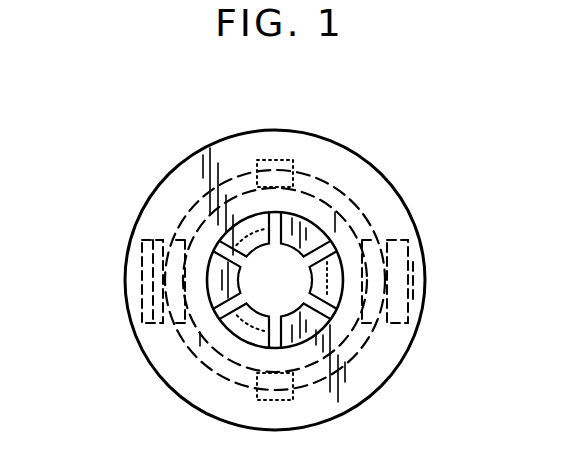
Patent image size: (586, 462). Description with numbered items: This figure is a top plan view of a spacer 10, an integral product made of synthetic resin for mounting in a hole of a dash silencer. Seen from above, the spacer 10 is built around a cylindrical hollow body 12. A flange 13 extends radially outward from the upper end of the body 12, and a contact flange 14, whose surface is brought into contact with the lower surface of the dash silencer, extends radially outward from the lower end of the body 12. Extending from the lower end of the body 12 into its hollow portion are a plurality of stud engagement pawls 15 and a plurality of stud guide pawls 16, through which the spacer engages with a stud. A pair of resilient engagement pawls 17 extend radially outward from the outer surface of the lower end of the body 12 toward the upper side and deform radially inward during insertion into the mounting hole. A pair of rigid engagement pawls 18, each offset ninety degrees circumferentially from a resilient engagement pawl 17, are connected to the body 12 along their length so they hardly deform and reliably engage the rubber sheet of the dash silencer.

The spacer 10 is at (345, 135).
The cylindrical hollow body 12 is at (224, 352).
The flange 13 is at (368, 197).
The contact flange 14 is at (352, 360).
The stud engagement pawls 15 is at (318, 279).
The stud guide pawls 16 is at (228, 268).
The resilient engagement pawls 17 is at (425, 262).
The rigid engagement pawls 18 is at (270, 160).